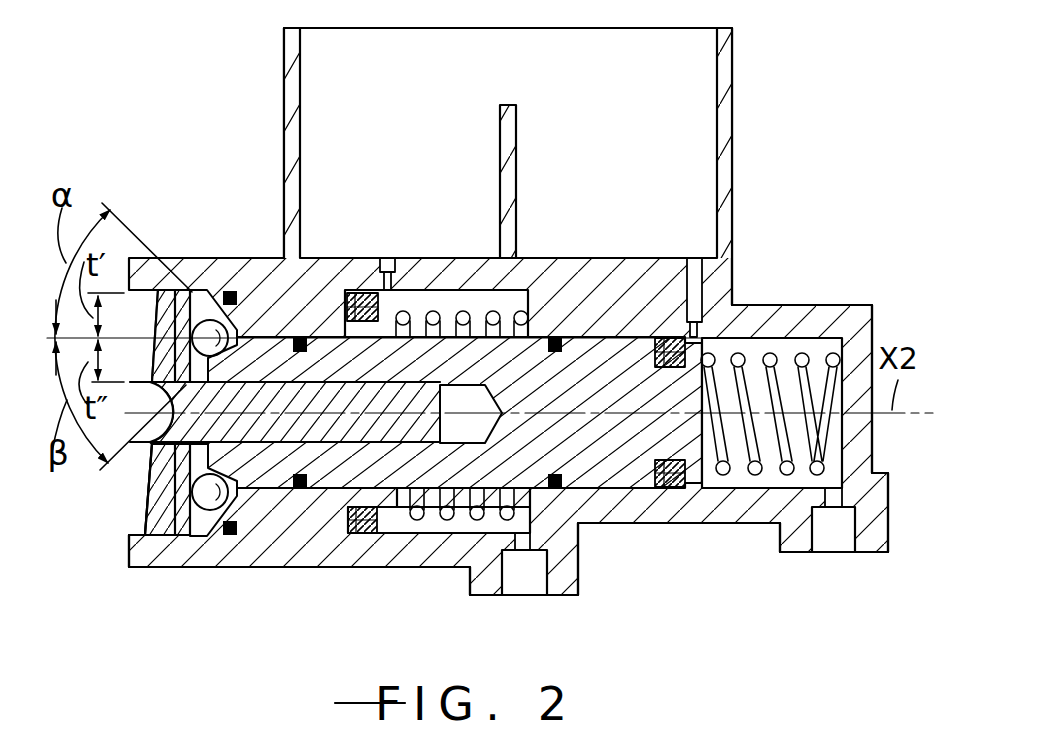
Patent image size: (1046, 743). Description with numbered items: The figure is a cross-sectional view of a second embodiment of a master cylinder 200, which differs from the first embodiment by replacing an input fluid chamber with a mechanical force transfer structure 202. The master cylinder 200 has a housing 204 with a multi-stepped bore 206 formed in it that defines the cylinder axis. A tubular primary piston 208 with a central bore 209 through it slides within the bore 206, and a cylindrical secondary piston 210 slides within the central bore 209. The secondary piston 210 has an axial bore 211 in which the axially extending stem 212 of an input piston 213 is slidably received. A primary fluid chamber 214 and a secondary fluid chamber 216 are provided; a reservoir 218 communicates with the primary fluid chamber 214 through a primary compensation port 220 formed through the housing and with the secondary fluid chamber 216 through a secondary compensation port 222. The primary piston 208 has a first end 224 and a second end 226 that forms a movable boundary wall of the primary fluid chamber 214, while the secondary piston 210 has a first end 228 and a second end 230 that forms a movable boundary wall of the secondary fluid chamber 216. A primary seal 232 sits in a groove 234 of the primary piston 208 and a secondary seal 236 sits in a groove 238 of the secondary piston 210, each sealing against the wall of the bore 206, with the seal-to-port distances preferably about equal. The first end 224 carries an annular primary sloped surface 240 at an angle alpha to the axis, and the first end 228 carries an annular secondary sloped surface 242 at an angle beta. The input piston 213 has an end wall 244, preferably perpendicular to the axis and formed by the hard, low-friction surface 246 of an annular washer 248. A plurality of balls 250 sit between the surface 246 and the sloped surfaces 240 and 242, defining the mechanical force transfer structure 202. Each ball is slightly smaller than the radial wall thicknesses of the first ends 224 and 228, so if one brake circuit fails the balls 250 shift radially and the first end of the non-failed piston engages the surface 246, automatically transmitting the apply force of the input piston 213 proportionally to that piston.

The master cylinder 200 is at (744, 132).
The mechanical force transfer structure 202 is at (188, 568).
The housing 204 is at (716, 276).
The multi-stepped bore 206 is at (793, 343).
The primary piston 208 is at (340, 292).
The central bore 209 is at (343, 490).
The secondary piston 210 is at (612, 478).
The axial bore 211 is at (468, 395).
The stem 212 is at (478, 432).
The input piston 213 is at (178, 512).
The primary fluid chamber 214 is at (507, 290).
The secondary fluid chamber 216 is at (745, 451).
The reservoir 218 is at (306, 102).
The primary compensation port 220 is at (392, 290).
The secondary compensation port 222 is at (693, 335).
The first end 224 is at (195, 540).
The second end 226 is at (400, 523).
The first end 228 is at (175, 455).
The second end 230 is at (703, 391).
The primary seal 232 is at (368, 295).
The groove 234 is at (362, 535).
The secondary seal 236 is at (670, 336).
The groove 238 is at (668, 478).
The primary sloped surface 240 is at (162, 536).
The secondary sloped surface 242 is at (167, 511).
The end wall 244 is at (210, 305).
The surface 246 is at (190, 550).
The annular washer 248 is at (178, 300).
The balls 250 is at (215, 338).